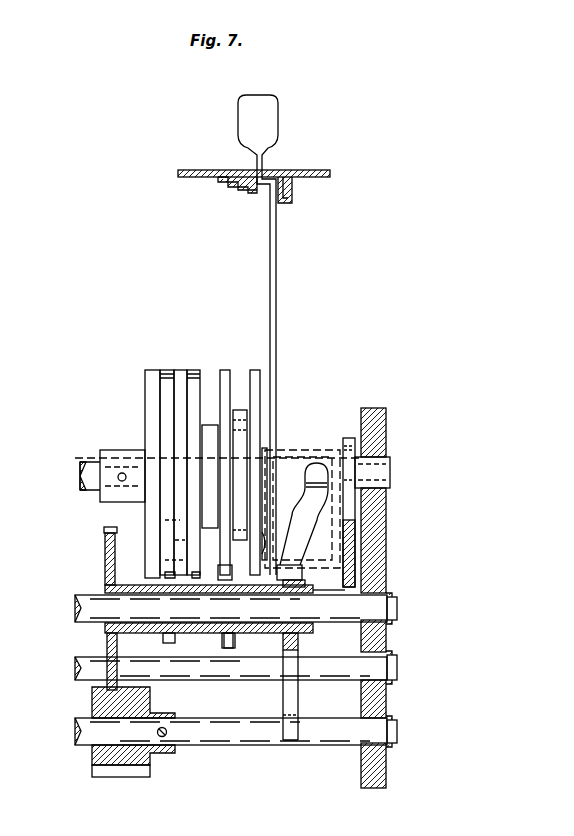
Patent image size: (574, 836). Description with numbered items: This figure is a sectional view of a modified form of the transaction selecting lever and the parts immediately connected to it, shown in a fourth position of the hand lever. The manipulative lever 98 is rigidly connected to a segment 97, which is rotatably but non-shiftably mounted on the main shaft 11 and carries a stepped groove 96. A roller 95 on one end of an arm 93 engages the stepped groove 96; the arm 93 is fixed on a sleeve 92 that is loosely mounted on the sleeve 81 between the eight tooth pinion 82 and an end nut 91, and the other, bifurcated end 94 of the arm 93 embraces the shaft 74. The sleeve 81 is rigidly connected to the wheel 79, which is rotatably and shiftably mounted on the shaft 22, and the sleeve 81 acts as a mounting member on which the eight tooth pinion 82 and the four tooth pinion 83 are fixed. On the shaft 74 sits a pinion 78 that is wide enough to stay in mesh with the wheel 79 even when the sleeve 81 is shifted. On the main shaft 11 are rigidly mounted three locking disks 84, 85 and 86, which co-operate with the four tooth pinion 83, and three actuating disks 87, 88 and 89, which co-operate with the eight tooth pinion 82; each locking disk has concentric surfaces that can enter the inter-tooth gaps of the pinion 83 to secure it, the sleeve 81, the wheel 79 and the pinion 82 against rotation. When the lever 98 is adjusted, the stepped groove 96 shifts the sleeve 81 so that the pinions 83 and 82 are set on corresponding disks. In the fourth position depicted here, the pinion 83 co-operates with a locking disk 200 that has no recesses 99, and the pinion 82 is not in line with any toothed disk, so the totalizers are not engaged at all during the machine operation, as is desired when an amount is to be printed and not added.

The main shaft 11 is at (380, 470).
The shaft 22 is at (92, 604).
The shaft 74 is at (230, 735).
The pinion 78 is at (150, 762).
The wheel 79 is at (110, 642).
The sleeve 81 is at (142, 587).
The eight tooth pinion 82 is at (228, 650).
The four tooth pinion 83 is at (170, 643).
The locking disk 84 is at (160, 396).
The locking disk 85 is at (174, 378).
The locking disk 86 is at (195, 378).
The actuating disk 87 is at (223, 377).
The actuating disk 88 is at (240, 410).
The actuating disk 89 is at (255, 372).
The end nut 91 is at (313, 630).
The sleeve 92 is at (233, 640).
The arm 93 is at (298, 642).
The bifurcated end 94 is at (290, 740).
The roller 95 is at (290, 568).
The stepped groove 96 is at (302, 512).
The segment 97 is at (314, 452).
The manipulative lever 98 is at (272, 246).
The recesses 99 is at (160, 372).
The locking disk 200 is at (153, 418).